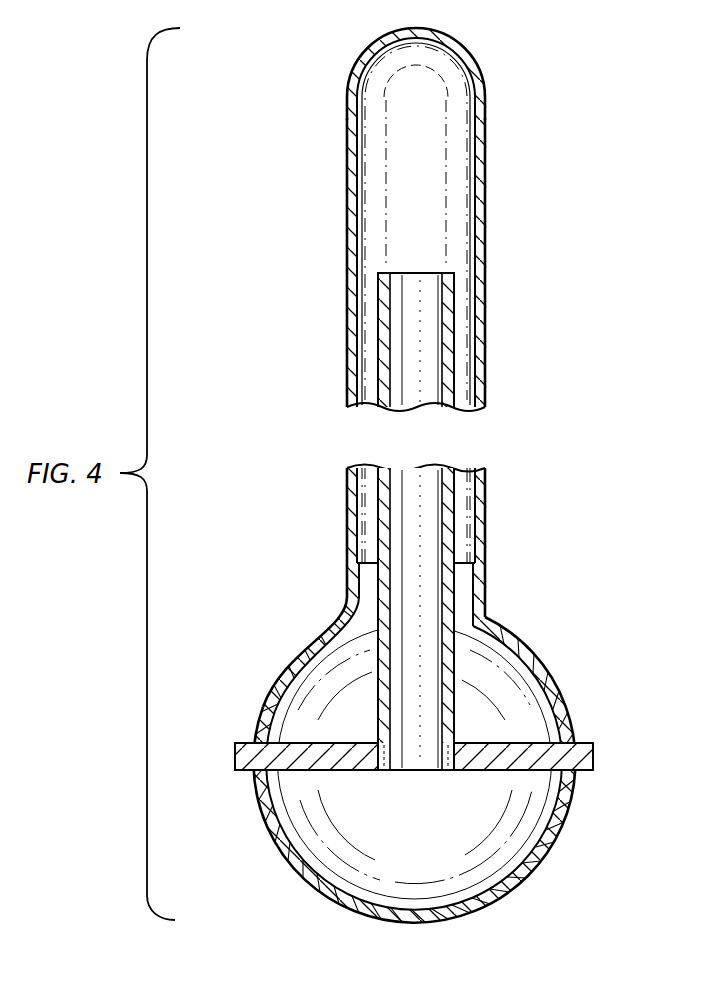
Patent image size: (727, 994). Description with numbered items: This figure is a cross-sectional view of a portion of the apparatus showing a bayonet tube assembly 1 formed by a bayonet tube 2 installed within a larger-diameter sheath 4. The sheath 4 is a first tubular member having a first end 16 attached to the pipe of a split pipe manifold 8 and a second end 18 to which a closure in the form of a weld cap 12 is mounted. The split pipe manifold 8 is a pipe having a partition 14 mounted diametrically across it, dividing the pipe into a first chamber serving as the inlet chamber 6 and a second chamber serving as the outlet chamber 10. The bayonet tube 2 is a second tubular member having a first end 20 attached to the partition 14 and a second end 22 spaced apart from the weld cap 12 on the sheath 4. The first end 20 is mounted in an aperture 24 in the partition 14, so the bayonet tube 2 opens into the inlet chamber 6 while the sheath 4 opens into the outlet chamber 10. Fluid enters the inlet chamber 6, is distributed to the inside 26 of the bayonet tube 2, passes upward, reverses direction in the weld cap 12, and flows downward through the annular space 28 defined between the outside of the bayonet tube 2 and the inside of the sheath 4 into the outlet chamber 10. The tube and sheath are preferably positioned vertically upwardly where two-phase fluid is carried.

The bayonet tube assembly 1 is at (507, 185).
The bayonet tube 2 is at (452, 708).
The sheath 4 is at (487, 303).
The inlet chamber 6 is at (429, 840).
The split pipe manifold 8 is at (568, 700).
The outlet chamber 10 is at (360, 681).
The weld cap 12 is at (464, 52).
The partition 14 is at (594, 757).
The first end 16 is at (484, 612).
The second end 18 is at (483, 83).
The first end 20 is at (458, 745).
The second end 22 is at (384, 273).
The aperture 24 is at (409, 773).
The inside 26 is at (430, 604).
The annular space 28 is at (466, 390).